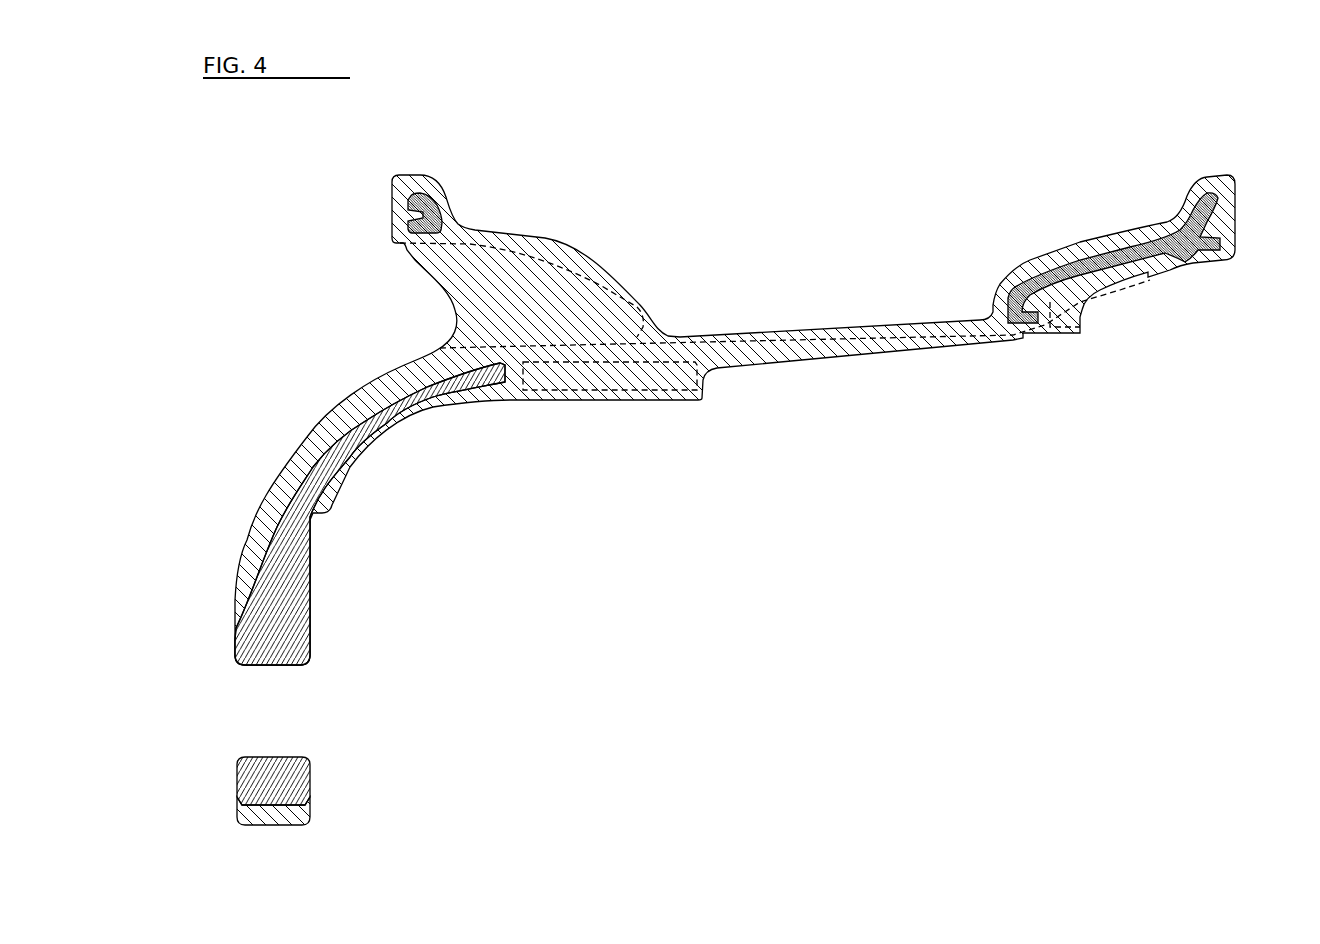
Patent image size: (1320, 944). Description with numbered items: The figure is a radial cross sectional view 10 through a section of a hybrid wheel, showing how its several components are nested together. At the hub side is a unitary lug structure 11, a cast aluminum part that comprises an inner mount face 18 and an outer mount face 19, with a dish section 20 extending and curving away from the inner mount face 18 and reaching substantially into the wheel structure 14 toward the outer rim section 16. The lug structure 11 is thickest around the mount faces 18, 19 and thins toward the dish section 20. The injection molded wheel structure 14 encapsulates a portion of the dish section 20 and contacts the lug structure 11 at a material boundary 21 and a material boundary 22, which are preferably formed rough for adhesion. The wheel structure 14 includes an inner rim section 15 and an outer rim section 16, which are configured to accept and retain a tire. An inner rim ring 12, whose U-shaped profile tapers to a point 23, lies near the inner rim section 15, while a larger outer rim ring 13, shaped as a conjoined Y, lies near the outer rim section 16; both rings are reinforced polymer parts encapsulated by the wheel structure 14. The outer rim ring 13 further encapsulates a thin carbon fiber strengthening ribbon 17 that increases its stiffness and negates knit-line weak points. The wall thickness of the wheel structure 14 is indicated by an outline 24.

The radial cross sectional view 10 is at (305, 203).
The unitary lug structure 11 is at (283, 633).
The inner rim ring 12 is at (427, 197).
The outer rim ring 13 is at (1123, 240).
The wheel structure 14 is at (752, 343).
The inner rim section 15 is at (378, 147).
The outer rim section 16 is at (1230, 163).
The strengthening ribbon 17 is at (1200, 250).
The inner mount face 18 is at (237, 640).
The outer mount face 19 is at (310, 783).
The dish section 20 is at (320, 443).
The material boundary 21 is at (400, 410).
The material boundary 22 is at (273, 807).
The point 23 is at (443, 230).
The outline 24 is at (617, 340).